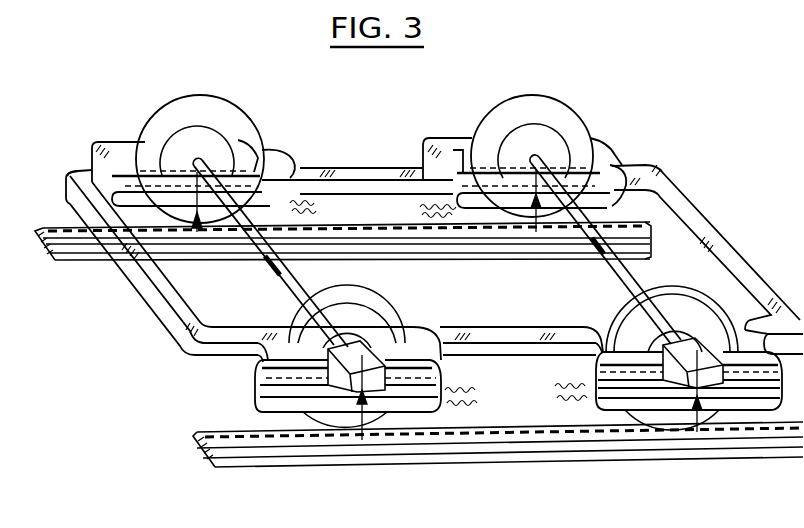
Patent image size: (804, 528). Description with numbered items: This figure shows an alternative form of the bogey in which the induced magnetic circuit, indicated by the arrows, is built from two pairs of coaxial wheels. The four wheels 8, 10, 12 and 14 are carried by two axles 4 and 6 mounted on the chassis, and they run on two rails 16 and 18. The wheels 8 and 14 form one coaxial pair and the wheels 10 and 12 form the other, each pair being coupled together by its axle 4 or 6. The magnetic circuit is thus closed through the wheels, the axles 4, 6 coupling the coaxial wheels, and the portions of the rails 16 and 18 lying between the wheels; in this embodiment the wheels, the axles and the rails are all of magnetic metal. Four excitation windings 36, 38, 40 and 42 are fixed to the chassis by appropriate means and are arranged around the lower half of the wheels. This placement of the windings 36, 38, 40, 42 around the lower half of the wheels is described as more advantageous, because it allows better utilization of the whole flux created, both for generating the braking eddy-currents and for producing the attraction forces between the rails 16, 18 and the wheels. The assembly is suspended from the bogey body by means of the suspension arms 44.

The axle 4 is at (292, 296).
The axle 6 is at (633, 270).
The wheel 8 is at (372, 325).
The wheel 10 is at (640, 328).
The wheel 12 is at (573, 123).
The wheel 14 is at (215, 142).
The rail 16 is at (492, 440).
The rail 18 is at (397, 238).
The excitation winding 36 is at (279, 409).
The excitation winding 38 is at (757, 412).
The excitation winding 40 is at (628, 190).
The excitation winding 42 is at (293, 163).
The suspension arm 44 is at (250, 384).